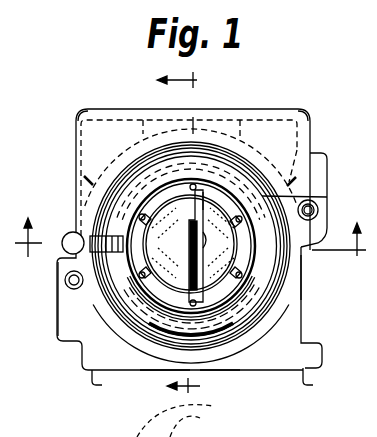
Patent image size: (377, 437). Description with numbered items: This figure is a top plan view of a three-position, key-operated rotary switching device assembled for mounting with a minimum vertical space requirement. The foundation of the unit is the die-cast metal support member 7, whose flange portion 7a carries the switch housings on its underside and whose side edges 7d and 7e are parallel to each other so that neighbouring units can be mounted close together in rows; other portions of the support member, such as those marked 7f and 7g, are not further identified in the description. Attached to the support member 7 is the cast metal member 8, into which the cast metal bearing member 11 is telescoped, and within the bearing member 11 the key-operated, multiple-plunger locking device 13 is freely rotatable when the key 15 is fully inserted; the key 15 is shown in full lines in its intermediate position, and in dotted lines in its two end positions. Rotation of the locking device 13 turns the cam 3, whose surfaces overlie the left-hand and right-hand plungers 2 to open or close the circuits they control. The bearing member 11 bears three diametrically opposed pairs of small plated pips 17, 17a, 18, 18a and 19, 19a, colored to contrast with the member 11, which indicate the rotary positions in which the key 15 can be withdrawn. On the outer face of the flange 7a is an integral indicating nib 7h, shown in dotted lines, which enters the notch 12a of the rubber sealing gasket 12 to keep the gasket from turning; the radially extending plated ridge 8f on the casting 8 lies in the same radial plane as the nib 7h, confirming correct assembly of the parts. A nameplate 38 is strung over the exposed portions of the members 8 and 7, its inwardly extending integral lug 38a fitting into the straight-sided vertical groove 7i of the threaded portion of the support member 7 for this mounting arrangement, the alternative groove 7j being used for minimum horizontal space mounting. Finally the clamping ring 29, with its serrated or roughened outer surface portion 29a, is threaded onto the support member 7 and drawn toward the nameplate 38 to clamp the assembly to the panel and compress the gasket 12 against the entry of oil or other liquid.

The plunger 2 is at (190, 250).
The cam 3 is at (186, 233).
The support member 7 is at (75, 348).
The flange portion 7a is at (322, 383).
The side edge 7d is at (76, 119).
The side edge 7e is at (101, 382).
The housing lug 7f is at (328, 169).
The housing lug 7g is at (60, 328).
The indicating nib 7h is at (62, 243).
The vertical groove 7i is at (222, 352).
The vertical groove 7j is at (304, 263).
The cast metal member 8 is at (292, 308).
The ridge 8f is at (103, 247).
The bearing member 11 is at (217, 301).
The sealing gasket 12 is at (72, 297).
The notch 12a is at (67, 281).
The locking device 13 is at (166, 254).
The key 15 is at (205, 194).
The pip 17 is at (194, 185).
The pip 17a is at (191, 305).
The pip 18 is at (327, 197).
The pip 18a is at (138, 269).
The pip 19 is at (140, 214).
The pip 19a is at (288, 292).
The clamping ring 29 is at (112, 200).
The roughened outer surface portion 29a is at (223, 366).
The nameplate 38 is at (303, 121).
The lug 38a is at (163, 369).